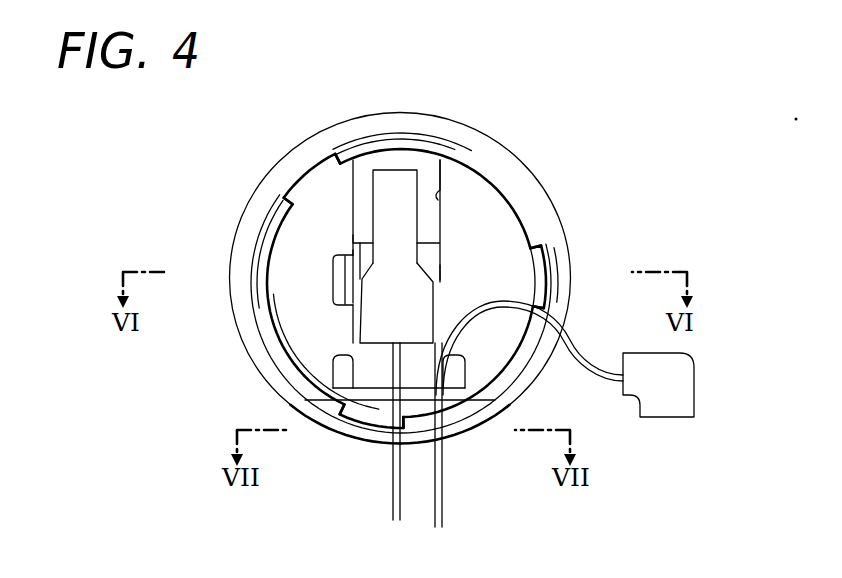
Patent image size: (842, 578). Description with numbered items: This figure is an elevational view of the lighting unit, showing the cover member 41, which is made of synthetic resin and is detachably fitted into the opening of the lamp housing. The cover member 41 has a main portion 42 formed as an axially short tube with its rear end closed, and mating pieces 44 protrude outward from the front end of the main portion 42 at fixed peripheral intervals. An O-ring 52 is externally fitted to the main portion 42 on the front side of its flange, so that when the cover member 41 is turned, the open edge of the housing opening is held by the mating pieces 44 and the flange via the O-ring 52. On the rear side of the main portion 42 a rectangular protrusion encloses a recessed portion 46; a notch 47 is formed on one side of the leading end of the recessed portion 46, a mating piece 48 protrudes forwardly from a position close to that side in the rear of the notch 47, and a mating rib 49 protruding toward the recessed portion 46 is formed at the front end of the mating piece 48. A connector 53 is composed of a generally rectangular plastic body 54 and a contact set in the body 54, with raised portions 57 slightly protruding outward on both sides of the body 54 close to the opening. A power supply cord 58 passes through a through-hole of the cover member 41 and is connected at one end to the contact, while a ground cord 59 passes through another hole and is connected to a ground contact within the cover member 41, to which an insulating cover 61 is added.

The cover member 41 is at (468, 120).
The main portion 42 is at (533, 206).
The mating pieces 44 is at (310, 150).
The recessed portion 46 is at (440, 182).
The notch 47 is at (333, 292).
The mating piece 48 is at (332, 262).
The mating rib 49 is at (356, 320).
The O-ring 52 is at (518, 183).
The connector 53 is at (352, 340).
The body 54 is at (397, 175).
The raised portions 57 is at (355, 250).
The power supply cord 58 is at (393, 495).
The ground cord 59 is at (445, 495).
The insulating cover 61 is at (683, 393).